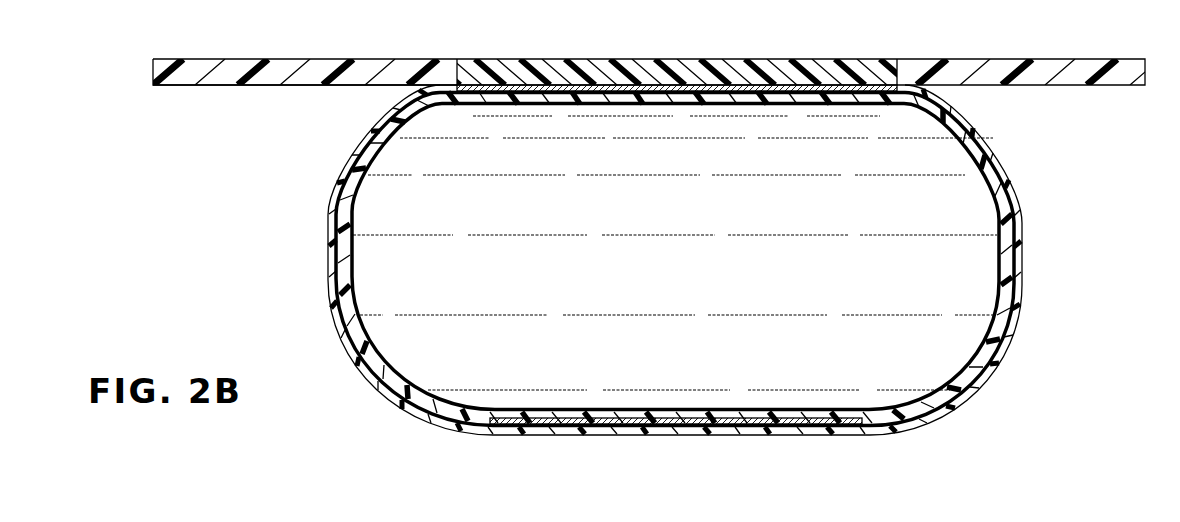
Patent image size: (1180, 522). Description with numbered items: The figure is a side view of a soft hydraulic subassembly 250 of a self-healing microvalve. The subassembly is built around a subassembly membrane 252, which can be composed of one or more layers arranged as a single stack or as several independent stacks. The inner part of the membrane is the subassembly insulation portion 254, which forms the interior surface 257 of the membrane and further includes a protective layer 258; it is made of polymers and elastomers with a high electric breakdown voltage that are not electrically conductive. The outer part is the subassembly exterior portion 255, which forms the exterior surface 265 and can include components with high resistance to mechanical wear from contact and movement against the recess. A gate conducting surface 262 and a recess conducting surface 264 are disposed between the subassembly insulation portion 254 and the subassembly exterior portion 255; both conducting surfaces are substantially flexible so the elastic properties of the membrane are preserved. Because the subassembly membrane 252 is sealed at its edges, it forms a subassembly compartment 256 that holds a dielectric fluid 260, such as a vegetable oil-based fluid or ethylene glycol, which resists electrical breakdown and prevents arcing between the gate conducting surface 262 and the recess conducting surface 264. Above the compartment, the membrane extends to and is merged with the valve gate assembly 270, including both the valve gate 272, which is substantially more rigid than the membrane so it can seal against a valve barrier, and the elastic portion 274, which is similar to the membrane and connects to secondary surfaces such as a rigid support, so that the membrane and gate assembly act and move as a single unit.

The soft hydraulic subassembly 250 is at (1050, 159).
The subassembly membrane 252 is at (1022, 258).
The subassembly insulation portion 254 is at (1012, 227).
The subassembly exterior portion 255 is at (1023, 277).
The subassembly compartment 256 is at (1002, 154).
The interior surface 257 is at (1012, 335).
The protective layer 258 is at (1013, 303).
The dielectric fluid 260 is at (932, 362).
The gate conducting surface 262 is at (562, 84).
The recess conducting surface 264 is at (823, 425).
The exterior surface 265 is at (997, 362).
The valve gate assembly 270 is at (706, 44).
The valve gate 272 is at (840, 58).
The elastic portion 274 is at (262, 58).